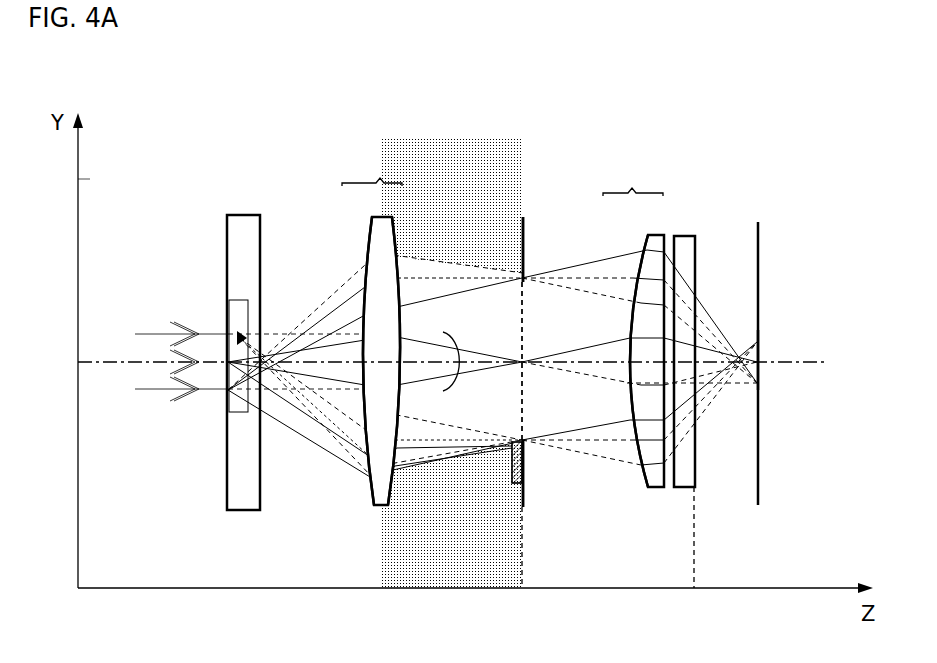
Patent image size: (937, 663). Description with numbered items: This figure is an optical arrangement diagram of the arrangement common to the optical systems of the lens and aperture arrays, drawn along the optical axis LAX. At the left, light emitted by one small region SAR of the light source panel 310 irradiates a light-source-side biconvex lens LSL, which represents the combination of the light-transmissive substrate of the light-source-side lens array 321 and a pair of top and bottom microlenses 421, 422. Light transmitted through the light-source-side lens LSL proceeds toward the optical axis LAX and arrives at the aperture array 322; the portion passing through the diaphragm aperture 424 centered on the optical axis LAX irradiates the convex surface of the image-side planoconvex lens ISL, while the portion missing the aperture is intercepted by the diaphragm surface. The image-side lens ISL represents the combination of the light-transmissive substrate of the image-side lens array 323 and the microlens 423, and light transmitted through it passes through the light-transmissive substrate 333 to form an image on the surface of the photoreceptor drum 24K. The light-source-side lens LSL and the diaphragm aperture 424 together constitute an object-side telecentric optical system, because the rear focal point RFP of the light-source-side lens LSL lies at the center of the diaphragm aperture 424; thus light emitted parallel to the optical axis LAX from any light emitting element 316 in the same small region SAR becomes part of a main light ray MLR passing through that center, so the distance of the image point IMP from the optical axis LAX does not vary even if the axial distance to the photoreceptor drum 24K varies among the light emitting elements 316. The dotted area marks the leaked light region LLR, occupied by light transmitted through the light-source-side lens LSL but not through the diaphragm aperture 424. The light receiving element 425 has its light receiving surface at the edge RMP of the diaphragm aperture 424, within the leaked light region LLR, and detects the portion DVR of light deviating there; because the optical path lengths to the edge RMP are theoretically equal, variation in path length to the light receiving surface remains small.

The light source panel 310 is at (241, 351).
The light emitting element 316 is at (229, 391).
The small region SAR is at (242, 300).
The light-source-side lens array 321 is at (381, 348).
The top microlens 421 is at (367, 256).
The bottom microlens 422 is at (398, 253).
The light-source-side lens LSL is at (372, 171).
The leaked light region LLR is at (452, 152).
The aperture array 322 is at (526, 349).
The diaphragm aperture 424 is at (496, 247).
The rear focal point RFP is at (521, 435).
The main light ray MLR is at (477, 370).
The light receiving element 425 is at (521, 485).
The deviating light portion DVR is at (510, 466).
The edge of diaphragm aperture RMP is at (524, 443).
The image-side lens array 323 is at (649, 345).
The microlens 423 is at (646, 251).
The image-side lens ISL is at (633, 181).
The light-transmissive substrate 333 is at (693, 396).
The photoreceptor drum 24K is at (763, 349).
The image point IMP is at (779, 359).
The optical axis LAX is at (475, 363).